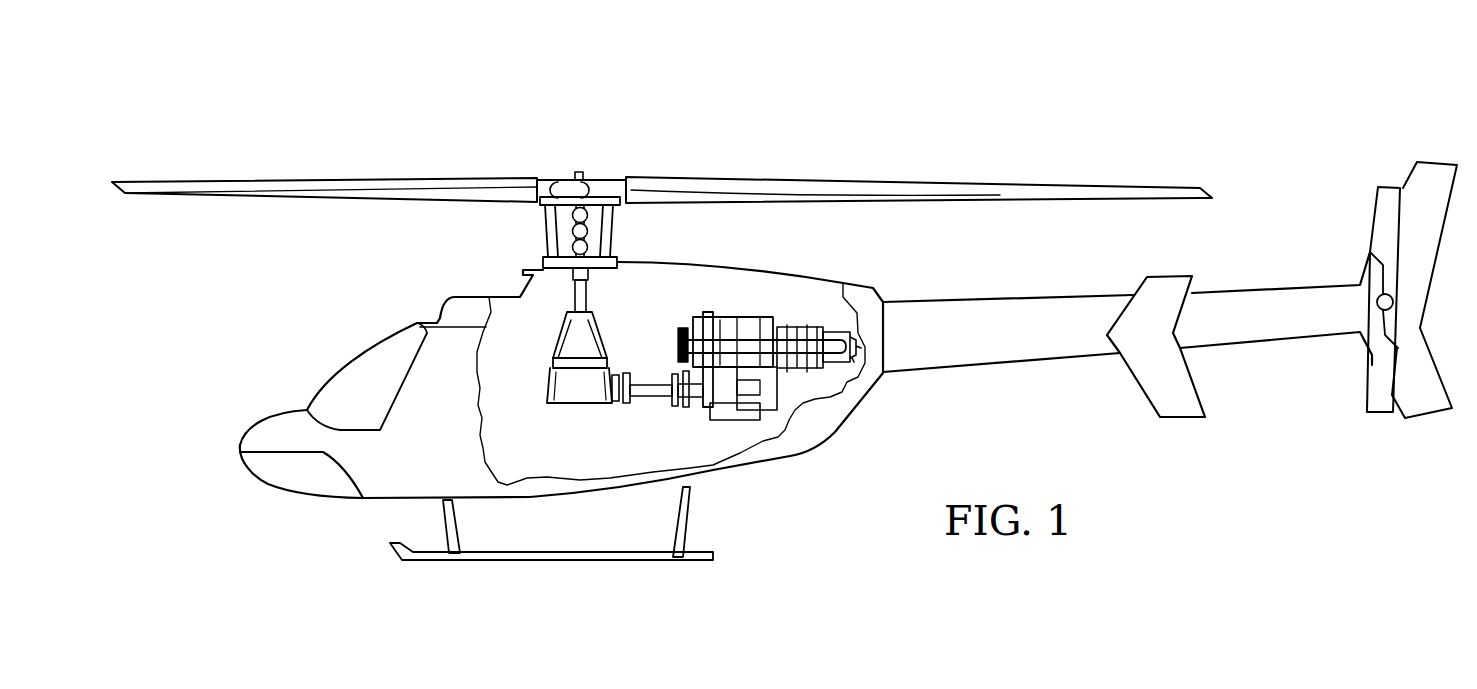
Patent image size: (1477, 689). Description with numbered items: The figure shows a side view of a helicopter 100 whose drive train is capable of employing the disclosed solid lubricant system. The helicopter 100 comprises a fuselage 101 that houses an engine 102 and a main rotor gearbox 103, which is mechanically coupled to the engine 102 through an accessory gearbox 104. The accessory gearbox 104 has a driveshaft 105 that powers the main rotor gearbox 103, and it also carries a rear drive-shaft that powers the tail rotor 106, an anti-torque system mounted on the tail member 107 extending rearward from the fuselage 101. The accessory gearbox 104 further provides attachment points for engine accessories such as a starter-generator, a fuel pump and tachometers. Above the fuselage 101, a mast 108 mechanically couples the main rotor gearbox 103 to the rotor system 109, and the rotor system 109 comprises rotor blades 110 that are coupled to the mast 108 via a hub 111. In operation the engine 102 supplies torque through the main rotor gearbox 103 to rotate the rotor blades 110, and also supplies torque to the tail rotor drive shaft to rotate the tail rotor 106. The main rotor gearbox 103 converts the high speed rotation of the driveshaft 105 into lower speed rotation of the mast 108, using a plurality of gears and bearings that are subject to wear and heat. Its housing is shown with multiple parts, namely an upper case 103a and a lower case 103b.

The helicopter 100 is at (893, 95).
The fuselage 101 is at (804, 458).
The engine 102 is at (793, 318).
The main rotor gearbox 103 is at (627, 343).
The upper case 103a is at (560, 405).
The lower case 103b is at (570, 352).
The accessory gearbox 104 is at (720, 405).
The driveshaft 105 is at (650, 398).
The tail rotor 106 is at (1375, 208).
The tail member 107 is at (1012, 370).
The mast 108 is at (592, 298).
The rotor system 109 is at (620, 222).
The rotor blades 110 is at (278, 183).
The hub 111 is at (570, 185).